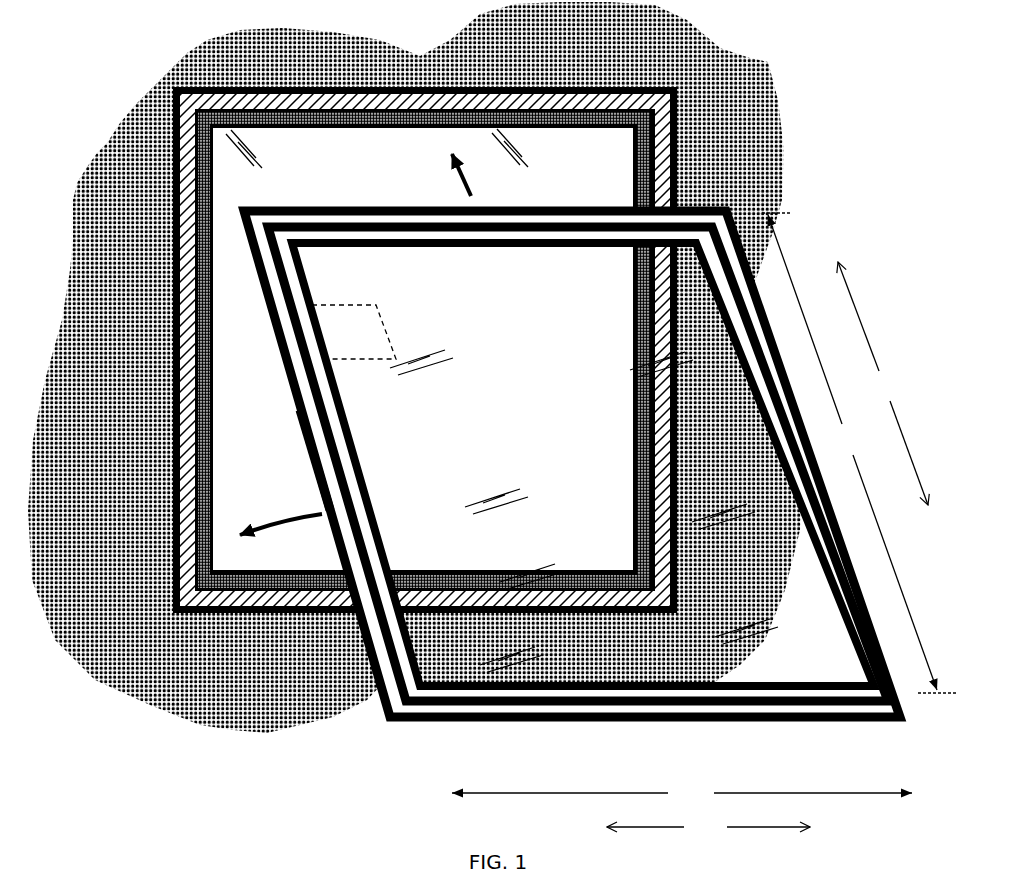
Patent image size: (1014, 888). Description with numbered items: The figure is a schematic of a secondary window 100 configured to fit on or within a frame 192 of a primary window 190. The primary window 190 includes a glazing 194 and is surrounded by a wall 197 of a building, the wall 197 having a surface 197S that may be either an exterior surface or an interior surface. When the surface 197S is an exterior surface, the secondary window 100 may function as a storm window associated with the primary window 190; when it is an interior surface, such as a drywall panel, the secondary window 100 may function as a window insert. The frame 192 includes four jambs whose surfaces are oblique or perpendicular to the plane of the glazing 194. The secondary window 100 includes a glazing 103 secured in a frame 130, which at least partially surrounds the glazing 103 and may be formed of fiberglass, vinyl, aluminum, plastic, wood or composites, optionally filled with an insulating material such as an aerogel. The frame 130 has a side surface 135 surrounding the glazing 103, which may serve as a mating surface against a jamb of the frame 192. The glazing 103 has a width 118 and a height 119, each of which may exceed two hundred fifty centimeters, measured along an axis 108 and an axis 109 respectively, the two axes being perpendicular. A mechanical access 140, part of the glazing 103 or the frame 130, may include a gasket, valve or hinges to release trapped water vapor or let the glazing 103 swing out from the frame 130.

The secondary window 100 is at (360, 714).
The glazing 103 is at (690, 671).
The axis 108 is at (708, 827).
The axis 109 is at (883, 383).
The width 118 is at (682, 793).
The height 119 is at (859, 453).
The frame 130 is at (413, 722).
The side surface 135 is at (388, 668).
The mechanical access 140 is at (334, 345).
The primary window 190 is at (556, 62).
The frame 192 is at (168, 184).
The glazing 194 is at (237, 389).
The wall 197 is at (798, 66).
The surface 197S is at (268, 677).